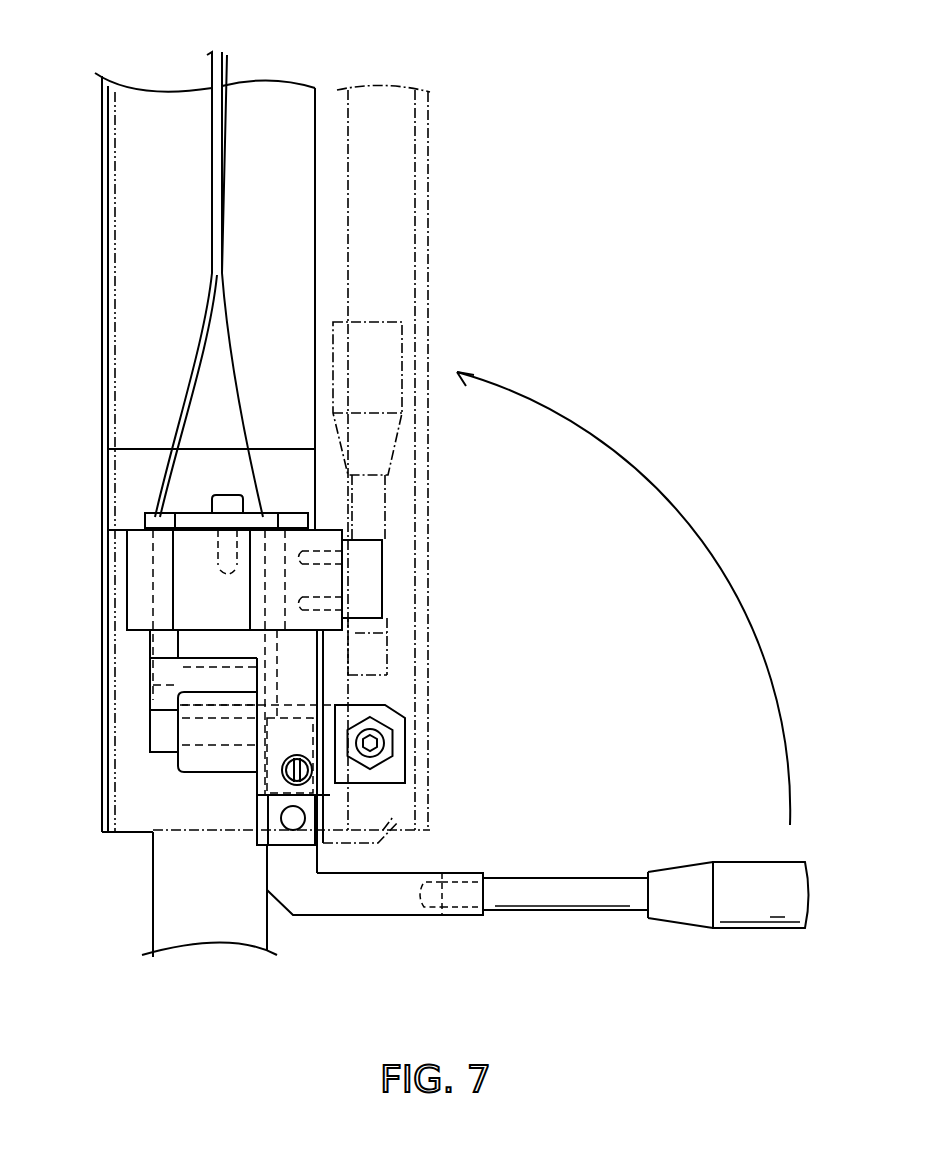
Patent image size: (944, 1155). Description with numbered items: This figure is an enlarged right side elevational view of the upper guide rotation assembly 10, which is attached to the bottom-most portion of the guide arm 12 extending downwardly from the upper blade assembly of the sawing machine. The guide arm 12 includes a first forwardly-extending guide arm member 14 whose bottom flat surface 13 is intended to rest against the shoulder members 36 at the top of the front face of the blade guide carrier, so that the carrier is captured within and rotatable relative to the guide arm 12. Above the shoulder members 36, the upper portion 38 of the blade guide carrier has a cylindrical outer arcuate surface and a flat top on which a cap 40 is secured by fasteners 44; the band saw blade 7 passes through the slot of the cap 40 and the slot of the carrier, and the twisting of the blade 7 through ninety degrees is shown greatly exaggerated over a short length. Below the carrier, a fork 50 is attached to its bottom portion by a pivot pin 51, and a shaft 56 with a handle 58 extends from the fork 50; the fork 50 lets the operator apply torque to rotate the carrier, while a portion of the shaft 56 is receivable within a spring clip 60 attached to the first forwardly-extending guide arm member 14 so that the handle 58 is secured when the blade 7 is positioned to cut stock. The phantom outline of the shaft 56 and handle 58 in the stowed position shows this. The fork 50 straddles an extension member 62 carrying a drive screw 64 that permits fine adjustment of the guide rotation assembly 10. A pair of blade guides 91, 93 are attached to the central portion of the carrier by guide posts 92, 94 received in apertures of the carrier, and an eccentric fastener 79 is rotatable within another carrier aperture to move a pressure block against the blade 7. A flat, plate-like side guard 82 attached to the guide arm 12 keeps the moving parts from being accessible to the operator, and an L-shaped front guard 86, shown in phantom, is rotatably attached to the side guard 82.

The blade 7 is at (213, 415).
The upper guide rotation assembly 10 is at (624, 280).
The guide arm 12 is at (263, 95).
The bottom flat surface 13 is at (300, 633).
The first forwardly-extending guide arm member 14 is at (332, 578).
The shoulder members 36 is at (190, 645).
The upper portion 38 is at (197, 567).
The cap 40 is at (190, 515).
The fasteners 44 is at (230, 495).
The fork 50 is at (425, 917).
The pivot pin 51 is at (293, 832).
The shaft 56 is at (568, 878).
The handle 58 is at (765, 930).
The spring clip 60 is at (372, 558).
The extension member 62 is at (405, 768).
The drive screw 64 is at (385, 743).
The eccentric fastener 79 is at (305, 783).
The side guard 82 is at (102, 258).
The front guard 86 is at (428, 165).
The blade guide 91 is at (183, 667).
The guide post 92 is at (150, 693).
The blade guide 93 is at (212, 758).
The guide post 94 is at (167, 732).